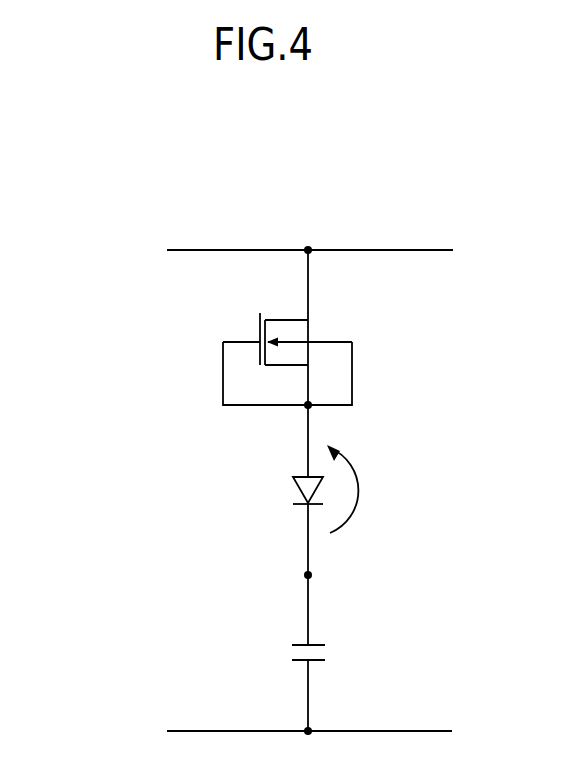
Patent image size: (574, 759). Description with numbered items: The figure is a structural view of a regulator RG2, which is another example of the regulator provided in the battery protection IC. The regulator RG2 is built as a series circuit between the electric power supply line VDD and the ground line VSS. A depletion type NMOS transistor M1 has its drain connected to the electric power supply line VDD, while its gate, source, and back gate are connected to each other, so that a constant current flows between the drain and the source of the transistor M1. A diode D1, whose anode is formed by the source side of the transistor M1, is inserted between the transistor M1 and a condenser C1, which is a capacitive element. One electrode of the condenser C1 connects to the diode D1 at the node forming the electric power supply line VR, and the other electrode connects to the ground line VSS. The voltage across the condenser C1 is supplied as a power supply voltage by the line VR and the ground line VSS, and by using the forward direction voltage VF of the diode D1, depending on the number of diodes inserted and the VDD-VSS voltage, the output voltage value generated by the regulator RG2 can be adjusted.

The regulator RG2 is at (95, 207).
The electric power supply line VDD is at (279, 251).
The ground line VSS is at (278, 732).
The depletion type NMOS transistor M1 is at (286, 355).
The diode D1 is at (290, 492).
The forward direction voltage VF is at (360, 489).
The electric power supply line VR is at (308, 575).
The condenser C1 is at (291, 656).